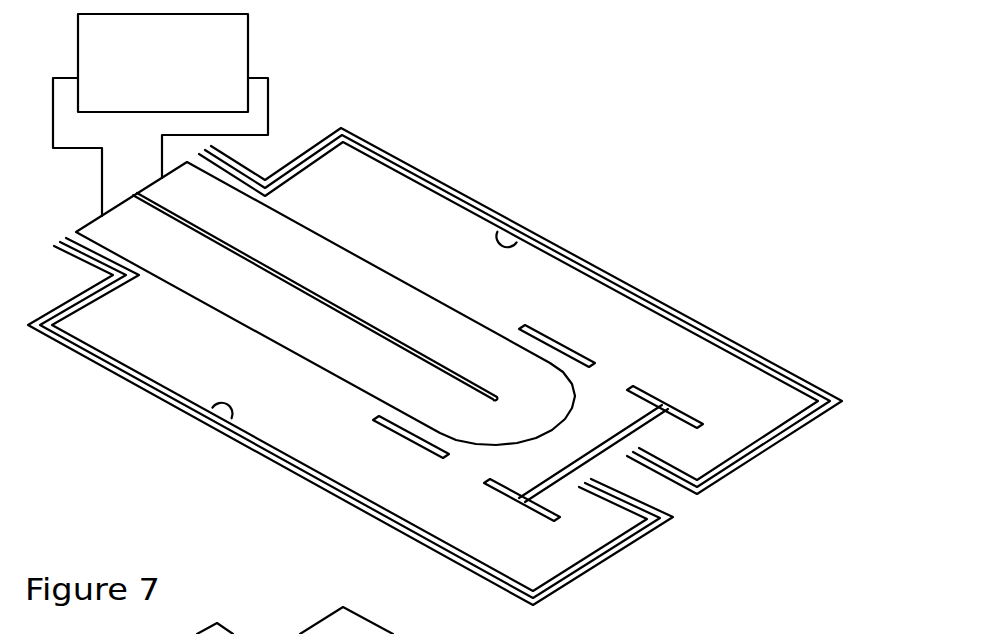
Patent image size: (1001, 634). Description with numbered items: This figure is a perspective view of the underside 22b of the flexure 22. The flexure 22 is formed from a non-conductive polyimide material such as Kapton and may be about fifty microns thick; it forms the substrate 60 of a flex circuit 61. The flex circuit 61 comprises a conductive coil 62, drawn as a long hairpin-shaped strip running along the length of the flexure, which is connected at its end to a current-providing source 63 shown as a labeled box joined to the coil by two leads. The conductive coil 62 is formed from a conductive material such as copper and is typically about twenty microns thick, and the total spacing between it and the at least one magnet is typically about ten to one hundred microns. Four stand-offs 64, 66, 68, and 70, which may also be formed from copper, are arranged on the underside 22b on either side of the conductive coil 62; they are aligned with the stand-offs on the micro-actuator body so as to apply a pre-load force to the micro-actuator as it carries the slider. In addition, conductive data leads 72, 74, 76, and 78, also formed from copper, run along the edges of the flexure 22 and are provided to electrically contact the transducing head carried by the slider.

The flexure 22 is at (456, 306).
The underside of the flexure 22b is at (705, 179).
The substrate 60 is at (456, 306).
The flex circuit 61 is at (456, 306).
The conductive coil 62 is at (360, 290).
The current-providing source 63 is at (249, 28).
The stand-off 64 is at (407, 440).
The stand-off 66 is at (513, 502).
The stand-off 68 is at (560, 342).
The stand-off 70 is at (685, 417).
The conductive data lead 72 is at (110, 375).
The conductive data lead 74 is at (220, 432).
The conductive data lead 76 is at (457, 190).
The conductive data lead 78 is at (520, 247).